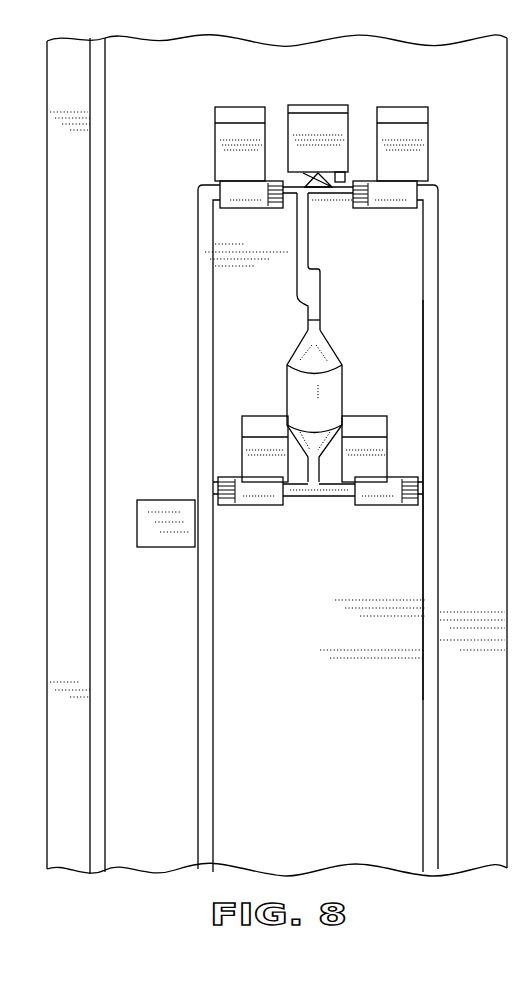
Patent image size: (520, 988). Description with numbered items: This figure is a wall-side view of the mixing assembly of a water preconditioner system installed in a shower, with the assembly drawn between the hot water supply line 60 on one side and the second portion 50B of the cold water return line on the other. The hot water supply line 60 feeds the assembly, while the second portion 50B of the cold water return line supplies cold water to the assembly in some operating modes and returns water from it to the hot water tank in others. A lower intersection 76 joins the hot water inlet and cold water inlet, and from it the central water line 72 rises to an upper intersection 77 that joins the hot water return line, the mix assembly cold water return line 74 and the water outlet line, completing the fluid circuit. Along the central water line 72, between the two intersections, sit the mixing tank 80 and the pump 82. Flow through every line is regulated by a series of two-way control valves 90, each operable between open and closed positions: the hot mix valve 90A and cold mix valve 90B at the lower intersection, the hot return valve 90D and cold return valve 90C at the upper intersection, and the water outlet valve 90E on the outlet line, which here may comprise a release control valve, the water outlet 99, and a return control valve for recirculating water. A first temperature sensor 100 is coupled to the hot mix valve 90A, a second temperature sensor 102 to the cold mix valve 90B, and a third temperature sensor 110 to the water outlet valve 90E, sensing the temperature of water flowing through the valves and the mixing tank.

The second portion of the cold water return line 50B is at (423, 730).
The hot water supply line 60 is at (200, 375).
The central water line 72 is at (318, 340).
The mix assembly cold water return line 74 is at (433, 265).
The intersection 76 is at (313, 494).
The intersection 77 is at (310, 228).
The mixing tank 80 is at (325, 355).
The pump 82 is at (323, 298).
The two-way control valves 90 is at (296, 323).
The hot mix valve 90A is at (253, 503).
The cold mix valve 90B is at (383, 503).
The cold return valve 90C is at (393, 187).
The hot return valve 90D is at (240, 200).
The water outlet valve 90E is at (317, 180).
The water outlet 99 is at (347, 83).
The first temperature sensor 100 is at (268, 422).
The second temperature sensor 102 is at (363, 422).
The third temperature sensor 110 is at (318, 115).